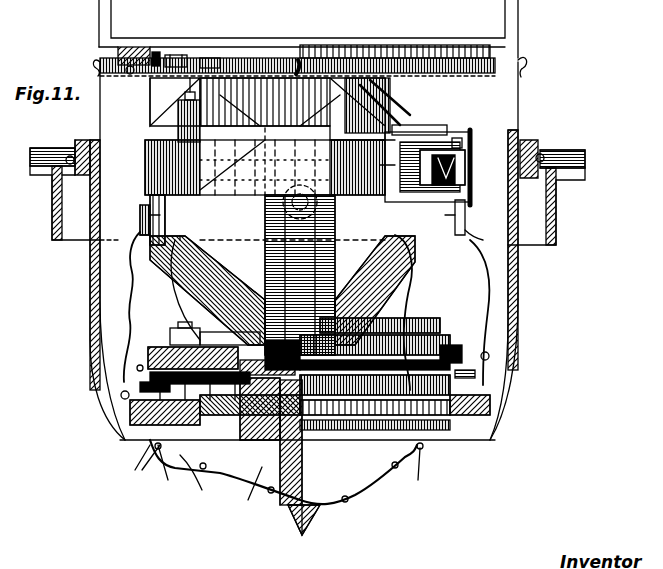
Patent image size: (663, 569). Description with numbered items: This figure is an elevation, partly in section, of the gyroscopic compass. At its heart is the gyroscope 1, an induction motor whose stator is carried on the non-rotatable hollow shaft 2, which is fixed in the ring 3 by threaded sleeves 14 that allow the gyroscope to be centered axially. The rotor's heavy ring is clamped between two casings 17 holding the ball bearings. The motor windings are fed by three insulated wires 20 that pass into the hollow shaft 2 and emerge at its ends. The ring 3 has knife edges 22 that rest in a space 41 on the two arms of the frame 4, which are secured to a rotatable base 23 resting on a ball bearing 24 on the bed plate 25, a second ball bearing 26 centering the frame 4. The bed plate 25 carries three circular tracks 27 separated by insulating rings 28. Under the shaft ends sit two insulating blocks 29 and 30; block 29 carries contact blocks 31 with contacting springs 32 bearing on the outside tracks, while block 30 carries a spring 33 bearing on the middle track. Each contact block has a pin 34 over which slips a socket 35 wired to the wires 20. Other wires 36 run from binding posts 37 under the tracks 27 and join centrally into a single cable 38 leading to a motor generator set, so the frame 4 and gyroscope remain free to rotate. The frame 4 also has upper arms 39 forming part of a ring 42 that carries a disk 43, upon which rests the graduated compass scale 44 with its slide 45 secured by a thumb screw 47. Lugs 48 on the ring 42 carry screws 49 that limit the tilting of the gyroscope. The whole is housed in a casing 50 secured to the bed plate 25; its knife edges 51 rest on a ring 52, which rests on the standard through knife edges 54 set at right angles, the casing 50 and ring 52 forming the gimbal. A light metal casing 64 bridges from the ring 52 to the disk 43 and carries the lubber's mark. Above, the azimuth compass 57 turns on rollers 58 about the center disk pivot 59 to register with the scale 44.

The gyroscope 1 is at (305, 205).
The hollow shaft 2 is at (142, 225).
The ring 3 is at (281, 161).
The frame 4 is at (443, 282).
The sleeves 14 is at (174, 267).
The casings 17 is at (302, 217).
The insulated wires 20 is at (120, 324).
The knife edges 22 is at (445, 165).
The rotatable base 23 is at (306, 367).
The ball bearing 24 is at (194, 487).
The bed plate 25 is at (307, 456).
The ball bearing 26 is at (247, 499).
The circular tracks 27 is at (139, 468).
The insulating rings 28 is at (150, 410).
The insulating block 29 is at (190, 375).
The insulating block 30 is at (455, 365).
The contact blocks 31 is at (150, 380).
The contacting springs 32 is at (150, 390).
The spring 33 is at (420, 432).
The pin 34 is at (135, 368).
The sockets 35 is at (120, 393).
The wires 36 is at (345, 497).
The binding posts 37 is at (291, 473).
The cable 38 is at (318, 520).
The upper arms 39 is at (400, 120).
The space 41 is at (460, 175).
The ring 42 is at (190, 95).
The disk 43 is at (218, 60).
The compass scale 44 is at (132, 60).
The slide 45 is at (118, 50).
The thumb screw 47 is at (157, 56).
The lugs 48 is at (178, 125).
The screw 49 is at (150, 165).
The casing 50 is at (96, 270).
The knife edges 51 is at (30, 162).
The ring 52 is at (52, 210).
The knife edges 54 is at (298, 210).
The azimuth compass 57 is at (343, 47).
The rollers 58 is at (185, 58).
The center disk pivot 59 is at (303, 58).
The light metal casing 64 is at (100, 112).